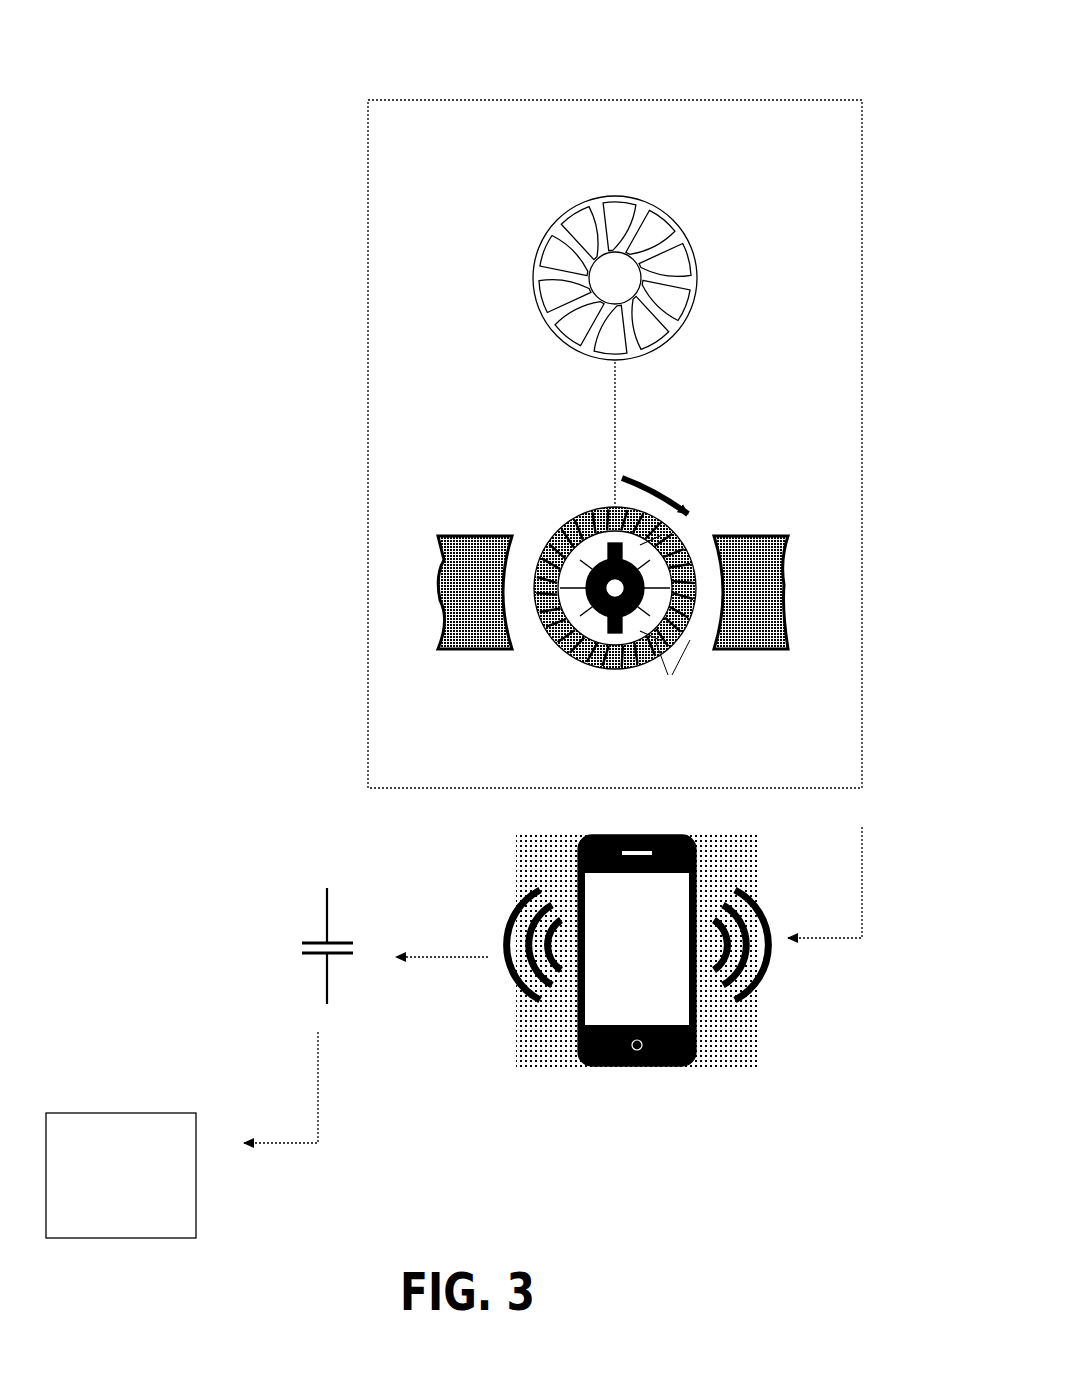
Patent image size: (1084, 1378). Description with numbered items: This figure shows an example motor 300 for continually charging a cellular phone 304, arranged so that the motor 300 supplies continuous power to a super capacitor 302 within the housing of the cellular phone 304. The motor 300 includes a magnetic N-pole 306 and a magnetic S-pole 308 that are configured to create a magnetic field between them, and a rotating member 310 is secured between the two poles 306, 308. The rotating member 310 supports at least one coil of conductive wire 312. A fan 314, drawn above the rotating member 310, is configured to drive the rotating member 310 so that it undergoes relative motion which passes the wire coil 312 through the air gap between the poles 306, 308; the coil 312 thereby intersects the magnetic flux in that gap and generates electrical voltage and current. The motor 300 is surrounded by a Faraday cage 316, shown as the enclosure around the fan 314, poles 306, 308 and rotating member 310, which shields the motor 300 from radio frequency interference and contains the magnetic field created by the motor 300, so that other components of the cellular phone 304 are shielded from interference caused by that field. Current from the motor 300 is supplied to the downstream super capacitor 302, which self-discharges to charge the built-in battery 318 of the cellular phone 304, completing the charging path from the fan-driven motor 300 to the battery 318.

The motor 300 is at (130, 32).
The super capacitor 302 is at (275, 900).
The cellular phone 304 is at (735, 1070).
The magnetic N-pole 306 is at (433, 600).
The magnetic S-pole 308 is at (800, 598).
The rotating member 310 is at (562, 632).
The coil of conductive wire 312 is at (572, 512).
The fan 314 is at (532, 264).
The Faraday cage 316 is at (338, 376).
The built-in battery 318 is at (186, 1090).